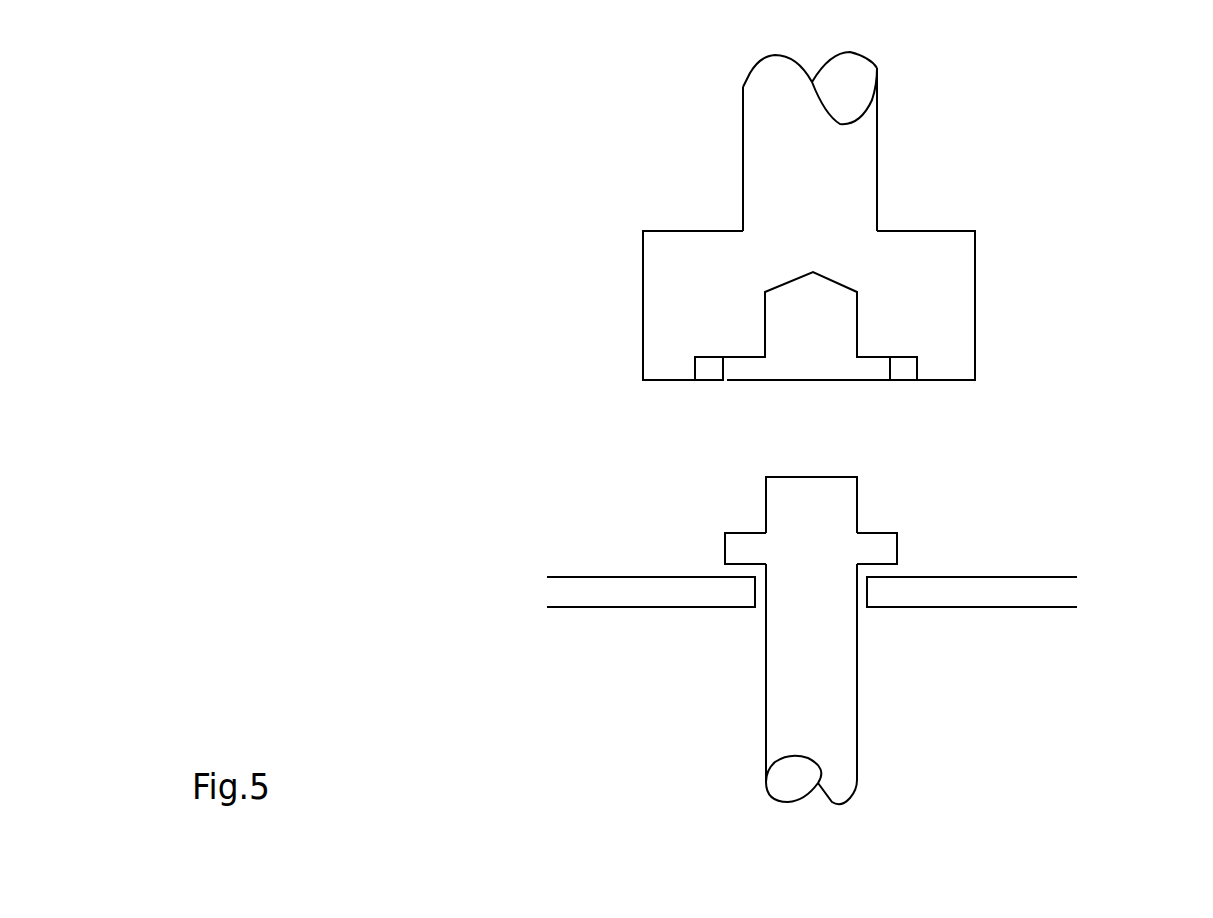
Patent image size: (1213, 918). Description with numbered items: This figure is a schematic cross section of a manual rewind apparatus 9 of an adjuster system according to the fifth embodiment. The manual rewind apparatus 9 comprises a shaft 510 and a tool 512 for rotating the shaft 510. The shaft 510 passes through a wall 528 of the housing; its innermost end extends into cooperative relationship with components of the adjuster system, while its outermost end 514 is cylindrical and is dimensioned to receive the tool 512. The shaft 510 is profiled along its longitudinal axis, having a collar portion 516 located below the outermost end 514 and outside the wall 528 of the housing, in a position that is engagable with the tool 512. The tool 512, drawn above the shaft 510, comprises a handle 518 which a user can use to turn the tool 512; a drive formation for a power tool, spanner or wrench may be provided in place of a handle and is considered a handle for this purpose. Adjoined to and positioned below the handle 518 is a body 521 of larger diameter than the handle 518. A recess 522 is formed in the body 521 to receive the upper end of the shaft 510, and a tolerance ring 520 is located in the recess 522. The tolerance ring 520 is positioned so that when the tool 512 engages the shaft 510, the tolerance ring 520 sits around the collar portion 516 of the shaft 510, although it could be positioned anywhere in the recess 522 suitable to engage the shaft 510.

The manual rewind apparatus 9 is at (1062, 117).
The tool 512 is at (910, 103).
The handle 518 is at (790, 152).
The body 521 is at (942, 282).
The recess 522 is at (812, 340).
The tolerance ring 520 is at (710, 365).
The shaft 510 is at (833, 707).
The outermost end 514 is at (803, 509).
The collar portion 516 is at (740, 547).
The wall 528 is at (1005, 588).